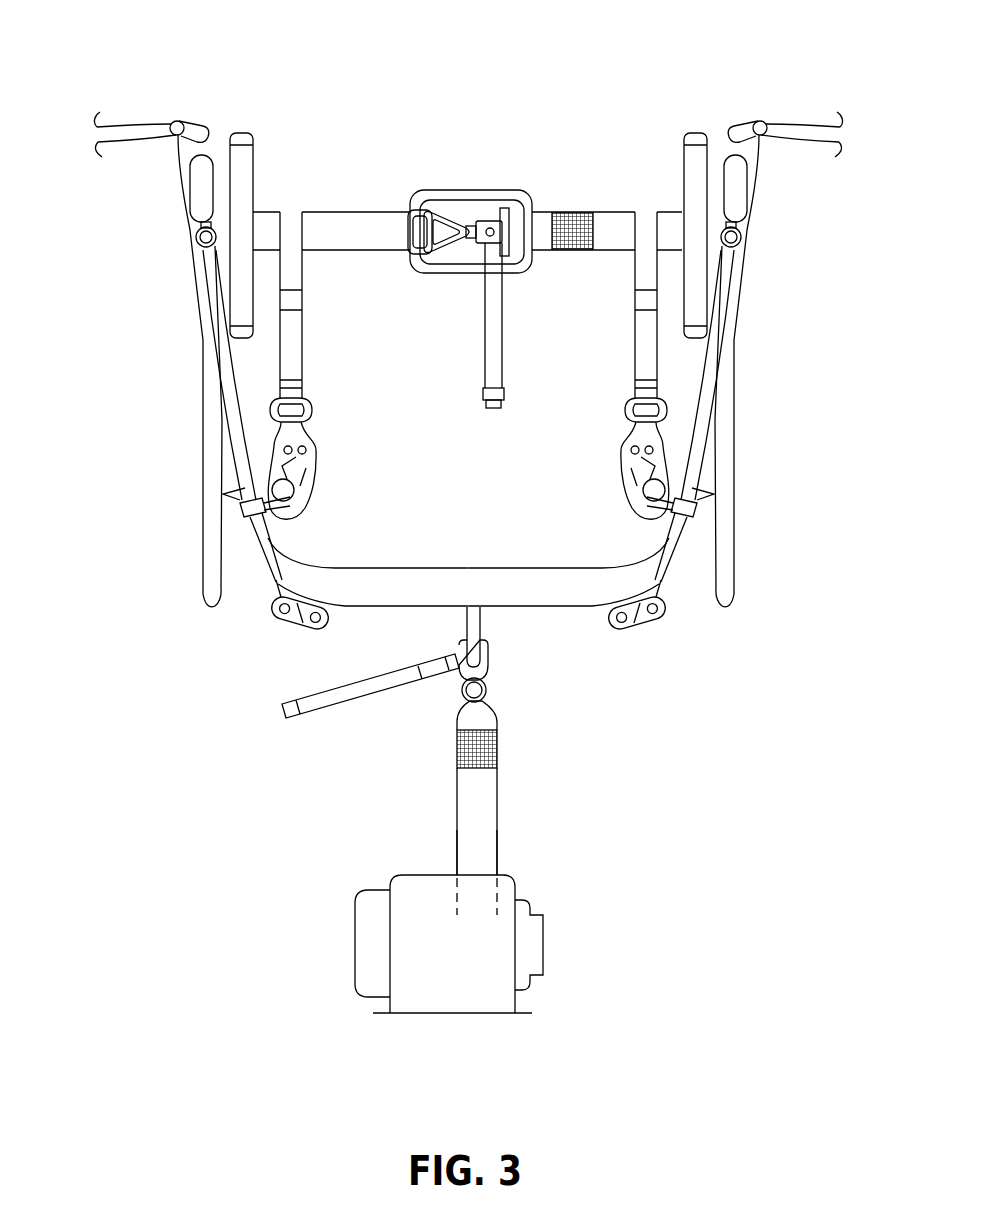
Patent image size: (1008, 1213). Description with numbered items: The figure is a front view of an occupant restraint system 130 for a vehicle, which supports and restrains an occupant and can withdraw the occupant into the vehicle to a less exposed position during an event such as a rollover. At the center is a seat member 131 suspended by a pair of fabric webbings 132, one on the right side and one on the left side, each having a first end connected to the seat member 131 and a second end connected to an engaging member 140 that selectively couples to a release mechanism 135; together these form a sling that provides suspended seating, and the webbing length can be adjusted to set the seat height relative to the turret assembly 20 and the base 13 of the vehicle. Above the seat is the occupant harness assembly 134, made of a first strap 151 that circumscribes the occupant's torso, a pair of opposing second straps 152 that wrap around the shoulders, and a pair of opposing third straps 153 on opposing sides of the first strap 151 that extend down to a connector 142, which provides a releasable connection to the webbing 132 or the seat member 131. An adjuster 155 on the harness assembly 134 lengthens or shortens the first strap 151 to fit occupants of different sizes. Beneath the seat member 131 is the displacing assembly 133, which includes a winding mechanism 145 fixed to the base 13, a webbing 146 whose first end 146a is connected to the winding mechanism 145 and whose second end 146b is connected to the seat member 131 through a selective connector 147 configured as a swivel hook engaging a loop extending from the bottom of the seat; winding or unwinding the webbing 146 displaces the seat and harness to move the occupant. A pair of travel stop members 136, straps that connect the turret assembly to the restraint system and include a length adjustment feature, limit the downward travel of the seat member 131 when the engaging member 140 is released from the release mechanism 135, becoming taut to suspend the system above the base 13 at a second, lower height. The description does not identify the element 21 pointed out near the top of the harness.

The base 13 is at (503, 1007).
The turret assembly 20 is at (148, 125).
The lift assembly 21 is at (449, 90).
The occupant restraint system 130 is at (183, 837).
The seat member 131 is at (560, 587).
The webbing 132 is at (232, 435).
The displacing assembly 133 is at (645, 805).
The occupant harness assembly 134 is at (548, 188).
The release mechanism 135 is at (168, 192).
The travel stop member 136 is at (188, 540).
The engaging member 140 is at (196, 230).
The connector 142 is at (305, 483).
The winding mechanism 145 is at (557, 893).
The webbing 146 is at (473, 818).
The first end 146a is at (473, 862).
The second end 146b is at (468, 716).
The selective connector 147 is at (490, 672).
The first strap 151 is at (330, 223).
The second strap 152 is at (254, 170).
The third strap 153 is at (297, 358).
The adjuster 155 is at (478, 188).